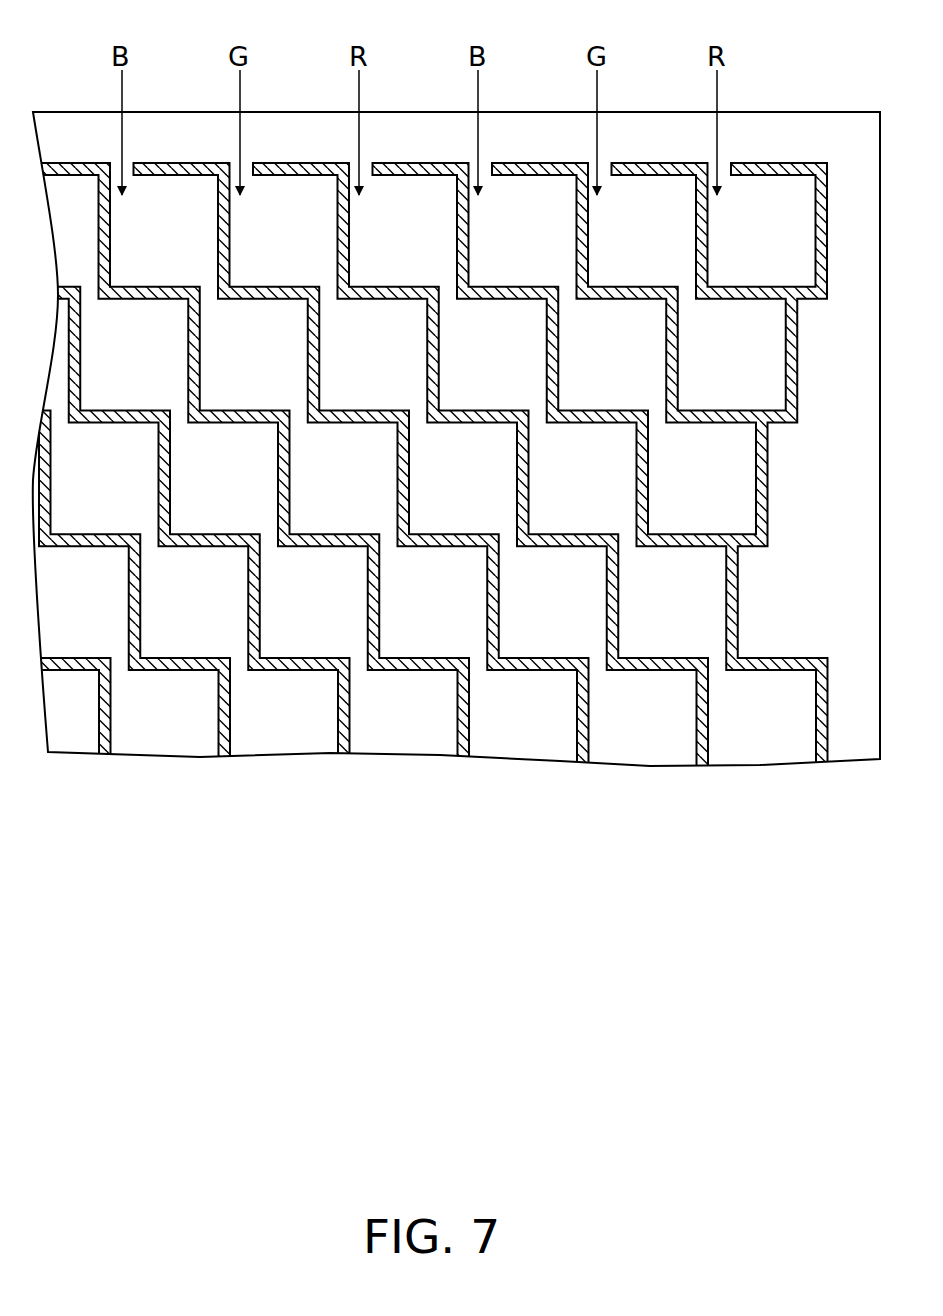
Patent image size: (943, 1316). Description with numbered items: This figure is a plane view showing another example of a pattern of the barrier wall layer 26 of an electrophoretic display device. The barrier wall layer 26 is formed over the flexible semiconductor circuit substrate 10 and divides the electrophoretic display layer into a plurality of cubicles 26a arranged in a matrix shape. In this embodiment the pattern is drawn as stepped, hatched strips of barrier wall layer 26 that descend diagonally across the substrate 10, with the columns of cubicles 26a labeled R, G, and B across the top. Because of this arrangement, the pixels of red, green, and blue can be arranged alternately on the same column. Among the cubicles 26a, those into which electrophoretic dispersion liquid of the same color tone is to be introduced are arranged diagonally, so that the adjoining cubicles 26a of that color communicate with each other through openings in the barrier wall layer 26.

The semiconductor circuit substrate 10 is at (833, 112).
The barrier wall layer 26 is at (420, 163).
The cubicle 26a is at (311, 630).